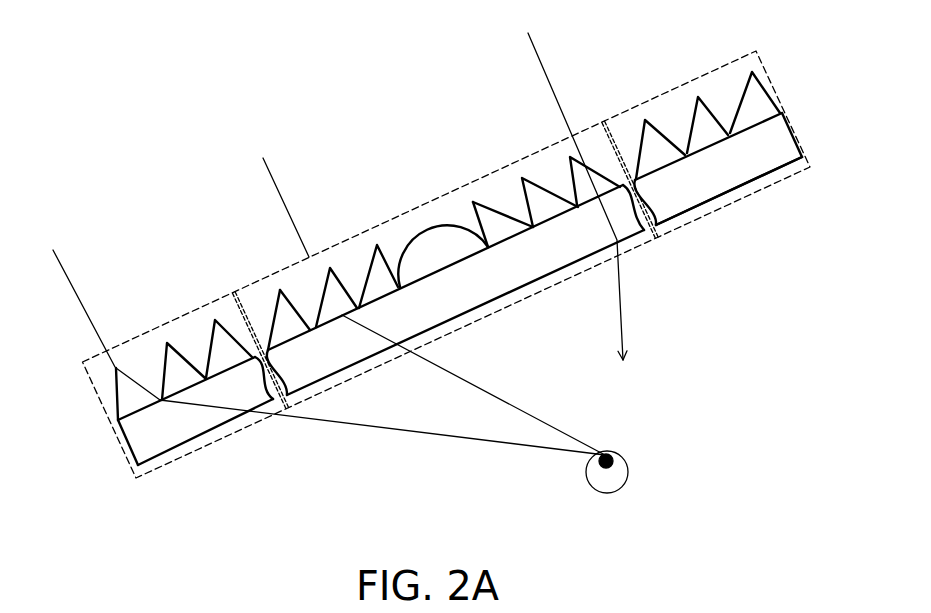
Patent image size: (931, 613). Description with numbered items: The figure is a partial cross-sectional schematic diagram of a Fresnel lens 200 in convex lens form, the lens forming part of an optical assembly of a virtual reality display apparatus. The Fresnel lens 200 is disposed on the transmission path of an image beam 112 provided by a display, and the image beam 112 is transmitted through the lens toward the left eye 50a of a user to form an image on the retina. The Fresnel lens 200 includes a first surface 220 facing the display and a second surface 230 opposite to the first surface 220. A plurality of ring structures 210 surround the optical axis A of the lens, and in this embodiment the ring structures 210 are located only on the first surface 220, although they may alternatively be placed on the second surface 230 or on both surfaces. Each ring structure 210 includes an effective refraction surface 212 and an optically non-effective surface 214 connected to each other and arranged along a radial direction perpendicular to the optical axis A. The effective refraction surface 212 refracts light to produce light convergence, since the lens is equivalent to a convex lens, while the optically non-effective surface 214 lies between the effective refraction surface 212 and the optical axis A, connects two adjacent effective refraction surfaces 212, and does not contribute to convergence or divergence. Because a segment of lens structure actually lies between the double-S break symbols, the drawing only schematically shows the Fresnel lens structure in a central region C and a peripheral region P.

The Fresnel lens 200 is at (157, 503).
The ring structures 210 is at (376, 268).
The effective refraction surface 212 is at (273, 310).
The optically non-effective surface 214 is at (129, 376).
The first surface 220 is at (757, 121).
The second surface 230 is at (677, 215).
The image beam 112 is at (53, 250).
The left eye 50a is at (623, 487).
The peripheral region P is at (192, 453).
The central region C is at (520, 297).
The optical axis A is at (477, 338).